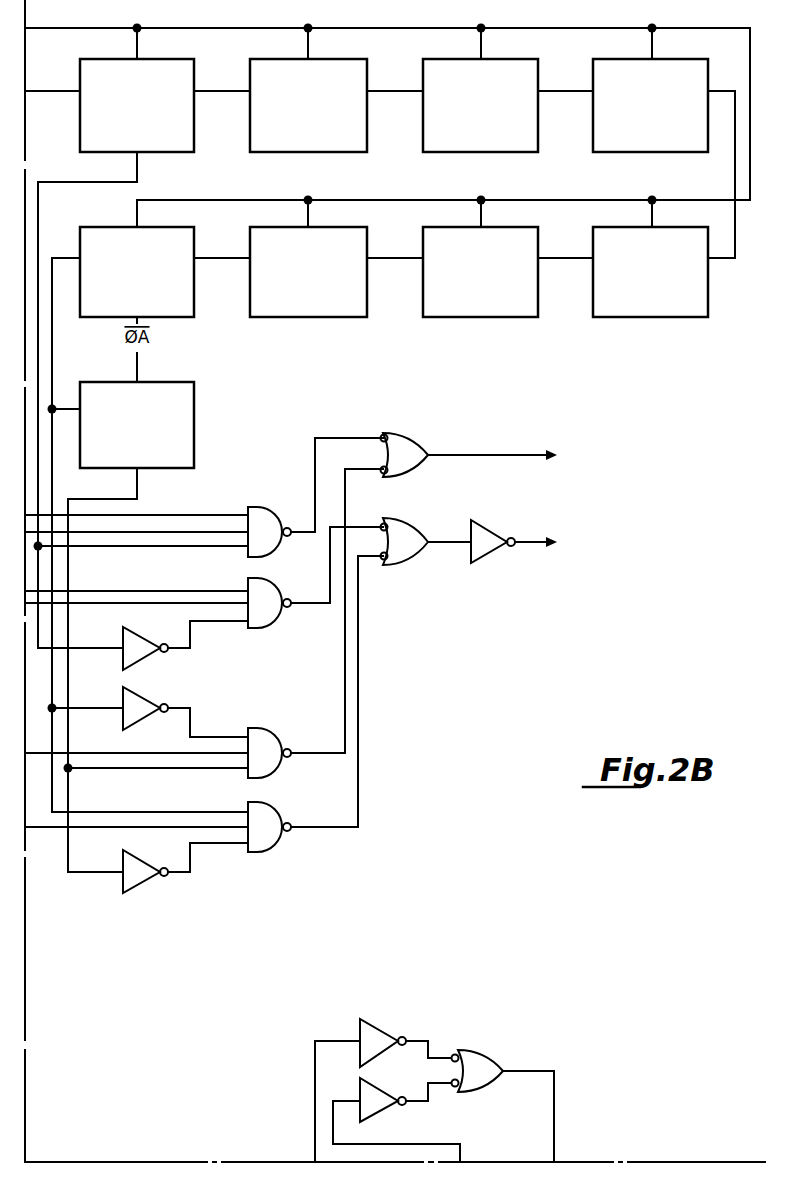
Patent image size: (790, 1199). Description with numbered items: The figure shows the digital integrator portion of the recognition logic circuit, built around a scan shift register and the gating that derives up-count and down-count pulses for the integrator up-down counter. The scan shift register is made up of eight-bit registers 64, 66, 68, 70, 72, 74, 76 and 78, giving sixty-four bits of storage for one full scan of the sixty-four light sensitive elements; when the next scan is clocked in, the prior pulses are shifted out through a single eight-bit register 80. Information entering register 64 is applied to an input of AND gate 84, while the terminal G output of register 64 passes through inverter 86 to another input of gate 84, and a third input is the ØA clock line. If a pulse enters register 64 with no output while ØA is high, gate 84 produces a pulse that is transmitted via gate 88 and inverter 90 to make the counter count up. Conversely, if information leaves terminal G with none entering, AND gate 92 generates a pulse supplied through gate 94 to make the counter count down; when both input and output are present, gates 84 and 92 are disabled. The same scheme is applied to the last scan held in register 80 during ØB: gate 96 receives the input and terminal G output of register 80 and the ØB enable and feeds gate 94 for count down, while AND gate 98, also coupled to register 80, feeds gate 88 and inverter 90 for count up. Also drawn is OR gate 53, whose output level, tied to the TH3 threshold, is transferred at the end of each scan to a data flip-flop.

The OR gate 53 is at (470, 1055).
The register 64 is at (92, 138).
The register 66 is at (299, 145).
The register 68 is at (485, 143).
The register 70 is at (645, 143).
The register 72 is at (638, 307).
The register 74 is at (473, 308).
The register 76 is at (300, 307).
The register 78 is at (90, 228).
The shift register stage 80 is at (185, 427).
The AND gate 84 is at (264, 622).
The inverter 86 is at (150, 650).
The gate 88 is at (416, 552).
The inverter 90 is at (488, 560).
The AND gate 92 is at (263, 507).
The gate 94 is at (398, 440).
The gate 96 is at (268, 740).
The AND gate 98 is at (268, 840).